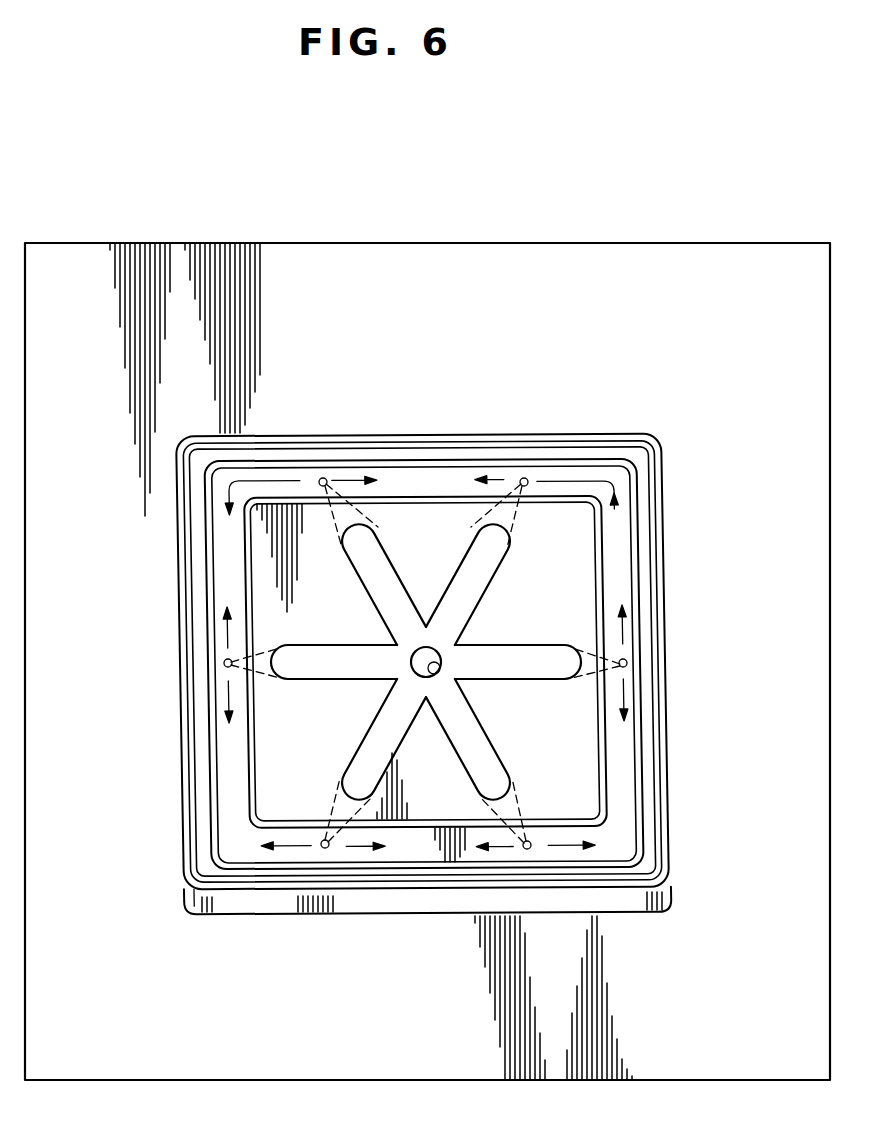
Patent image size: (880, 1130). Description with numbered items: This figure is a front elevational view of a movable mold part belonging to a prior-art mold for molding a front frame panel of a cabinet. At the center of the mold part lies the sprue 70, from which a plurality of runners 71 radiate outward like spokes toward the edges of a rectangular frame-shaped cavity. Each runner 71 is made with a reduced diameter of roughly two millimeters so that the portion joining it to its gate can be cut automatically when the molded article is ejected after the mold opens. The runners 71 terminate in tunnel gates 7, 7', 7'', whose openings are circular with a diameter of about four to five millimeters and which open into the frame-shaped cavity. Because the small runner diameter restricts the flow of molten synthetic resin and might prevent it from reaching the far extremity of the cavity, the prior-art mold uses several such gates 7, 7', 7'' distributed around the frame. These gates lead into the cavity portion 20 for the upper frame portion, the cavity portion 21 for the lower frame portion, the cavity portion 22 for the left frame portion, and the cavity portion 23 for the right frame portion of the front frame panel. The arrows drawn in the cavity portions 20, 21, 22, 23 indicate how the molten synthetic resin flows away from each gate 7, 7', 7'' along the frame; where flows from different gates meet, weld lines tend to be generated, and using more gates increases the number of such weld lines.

The tunnel gate 7 is at (502, 614).
The tunnel gate 7' is at (208, 675).
The tunnel gate 7'' is at (511, 464).
The cavity portion 20 is at (441, 478).
The cavity portion 21 is at (432, 850).
The cavity portion 22 is at (228, 565).
The cavity portion 23 is at (621, 568).
The sprue 70 is at (433, 678).
The runner 71 is at (345, 673).